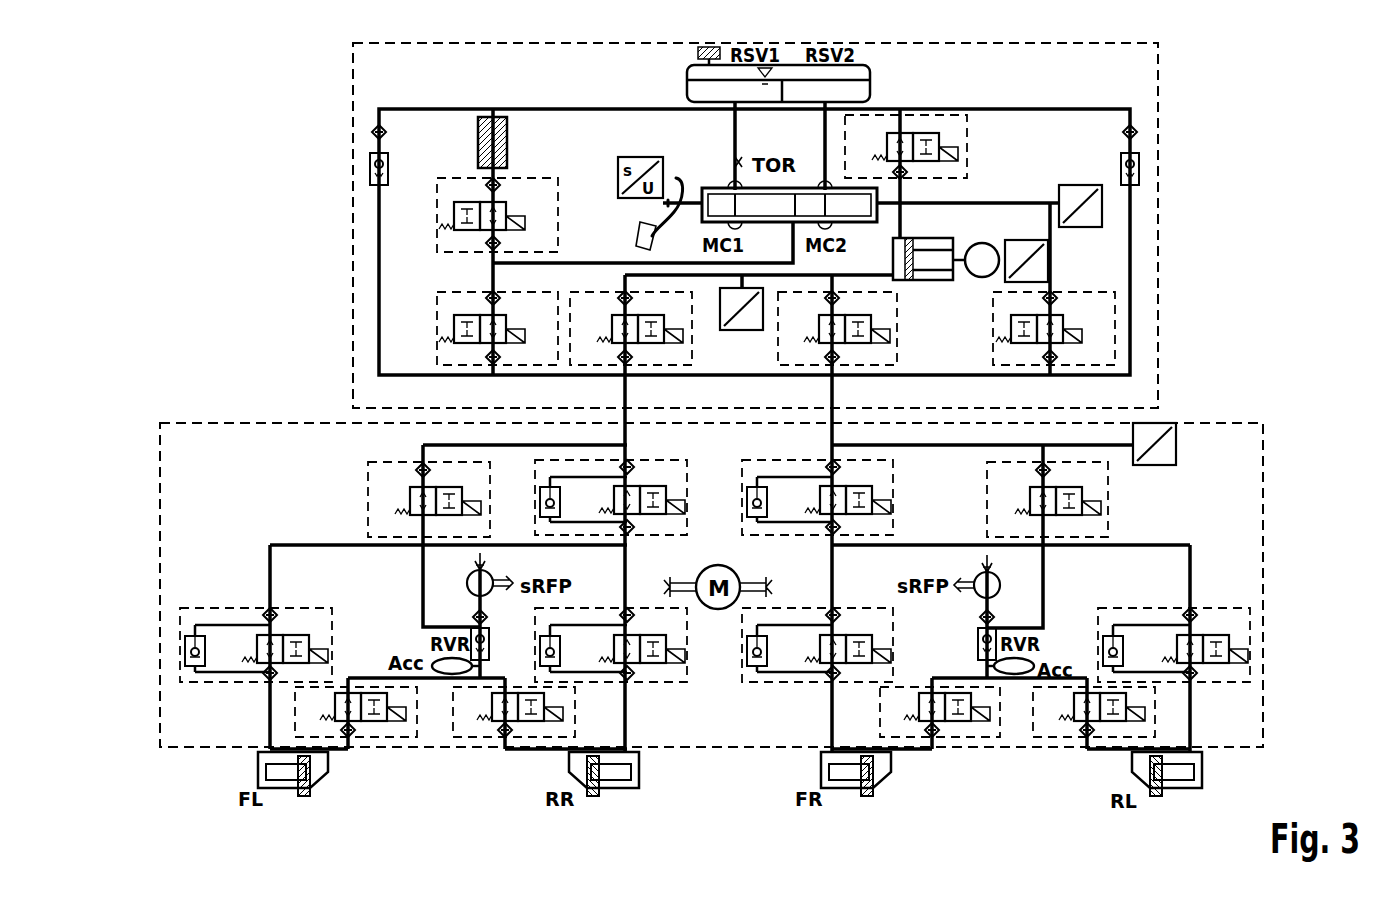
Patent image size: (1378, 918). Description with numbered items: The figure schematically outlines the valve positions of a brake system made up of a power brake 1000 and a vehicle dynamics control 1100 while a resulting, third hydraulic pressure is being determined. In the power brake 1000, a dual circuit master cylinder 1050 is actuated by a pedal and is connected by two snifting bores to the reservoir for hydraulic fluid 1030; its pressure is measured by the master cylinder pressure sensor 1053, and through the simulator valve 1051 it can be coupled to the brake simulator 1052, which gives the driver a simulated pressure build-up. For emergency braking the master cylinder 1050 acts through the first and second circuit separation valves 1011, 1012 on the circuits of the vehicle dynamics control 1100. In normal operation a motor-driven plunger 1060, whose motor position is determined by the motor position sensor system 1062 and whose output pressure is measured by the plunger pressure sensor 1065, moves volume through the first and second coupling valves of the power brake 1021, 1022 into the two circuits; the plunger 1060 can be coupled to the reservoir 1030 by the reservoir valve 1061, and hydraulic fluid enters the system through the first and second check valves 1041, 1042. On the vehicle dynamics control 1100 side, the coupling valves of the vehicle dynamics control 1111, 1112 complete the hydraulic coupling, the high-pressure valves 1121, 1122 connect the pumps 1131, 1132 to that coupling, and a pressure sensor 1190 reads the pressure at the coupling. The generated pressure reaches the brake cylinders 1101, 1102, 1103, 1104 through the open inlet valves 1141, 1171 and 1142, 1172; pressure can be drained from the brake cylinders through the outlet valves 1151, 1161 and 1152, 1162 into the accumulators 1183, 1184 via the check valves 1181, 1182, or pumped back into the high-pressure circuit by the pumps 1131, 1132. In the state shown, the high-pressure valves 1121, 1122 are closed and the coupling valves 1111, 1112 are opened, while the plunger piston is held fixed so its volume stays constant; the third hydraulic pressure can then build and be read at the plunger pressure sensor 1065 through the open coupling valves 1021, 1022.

The power brake 1000 is at (353, 80).
The first circuit separation valve CSV 1 1011 is at (437, 330).
The second circuit separation valve CSV 2 1012 is at (1115, 325).
The first coupling valve of the power brake PSV 1 1021 is at (690, 352).
The second coupling valve of the power brake PSV 2 1022 is at (778, 352).
The reservoir for hydraulic fluid 1030 is at (687, 88).
The first check valve BSV 1 1041 is at (370, 168).
The second check valve BSV 2 1042 is at (1140, 168).
The master cylinder 1050 is at (718, 192).
The valve SSV 1051 is at (437, 215).
The brake simulator PFS 1052 is at (478, 138).
The master cylinder pressure sensor 1053 is at (1102, 208).
The plunger 1060 is at (922, 246).
The valve POV 1061 is at (910, 128).
The sensor system for determining the electric motor position RPS 1062 is at (1025, 255).
The plunger pressure sensor 1065 is at (742, 330).
The vehicle dynamics control 1100 is at (200, 747).
The brake cylinder 1101 is at (276, 790).
The brake cylinder 1102 is at (626, 790).
The brake cylinder 1103 is at (826, 790).
The brake cylinder 1104 is at (1190, 790).
The first coupling valve of the vehicle dynamics control SCC 1111 is at (630, 466).
The second coupling valve of the vehicle dynamics control SCC 1112 is at (830, 466).
The high-pressure valve HSR 1121 is at (368, 508).
The high-pressure valve HSR 1122 is at (1108, 508).
The pump of the vehicle dynamics control 1131 is at (468, 586).
The pump of the vehicle dynamics control 1132 is at (1000, 588).
The valve ICF 1141 is at (180, 655).
The valve ICF 1142 is at (1250, 655).
The outlet valve 1151 is at (378, 746).
The outlet valve 1152 is at (1066, 746).
The outlet valve 1161 is at (482, 746).
The outlet valve 1162 is at (958, 746).
The valve ICF 1171 is at (652, 684).
The valve ICF 1172 is at (790, 684).
The check valve 1181 is at (486, 660).
The check valve 1182 is at (978, 645).
The accumulator 1183 is at (445, 680).
The accumulator 1184 is at (1020, 680).
The pressure sensor 1190 is at (1175, 432).